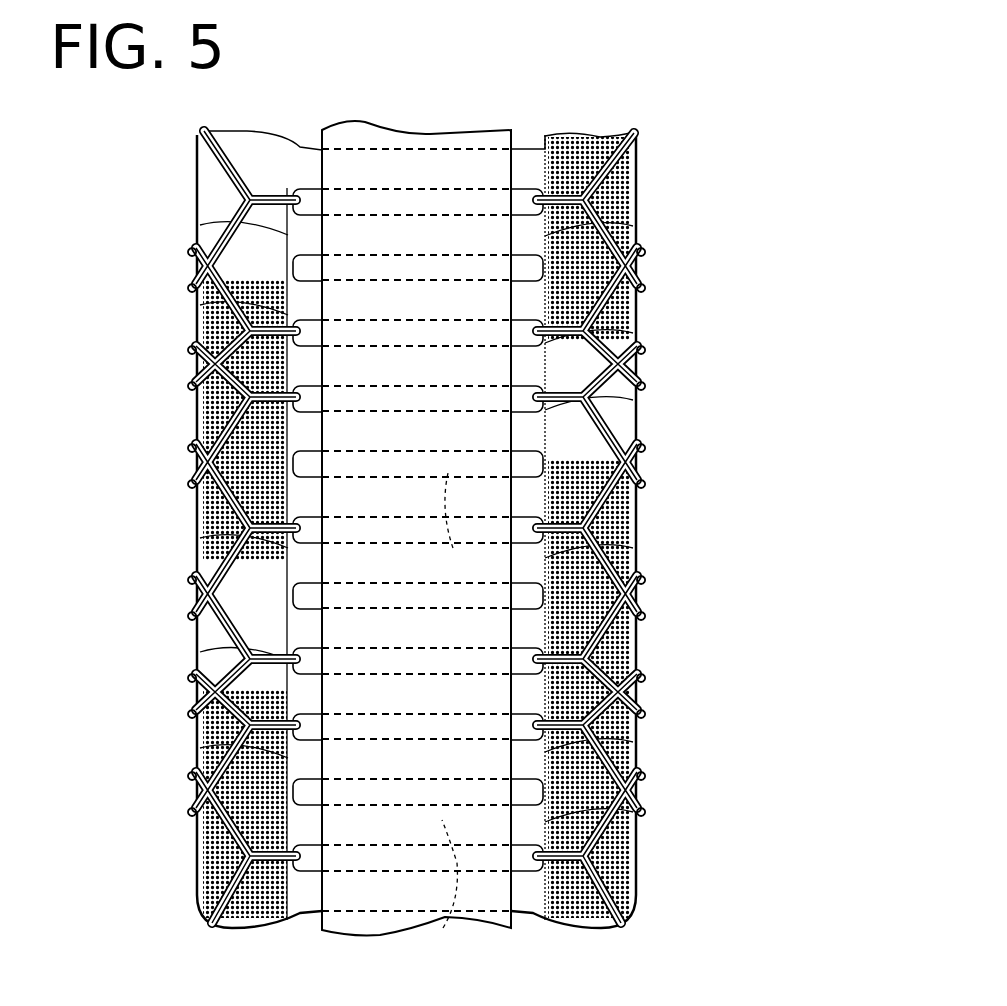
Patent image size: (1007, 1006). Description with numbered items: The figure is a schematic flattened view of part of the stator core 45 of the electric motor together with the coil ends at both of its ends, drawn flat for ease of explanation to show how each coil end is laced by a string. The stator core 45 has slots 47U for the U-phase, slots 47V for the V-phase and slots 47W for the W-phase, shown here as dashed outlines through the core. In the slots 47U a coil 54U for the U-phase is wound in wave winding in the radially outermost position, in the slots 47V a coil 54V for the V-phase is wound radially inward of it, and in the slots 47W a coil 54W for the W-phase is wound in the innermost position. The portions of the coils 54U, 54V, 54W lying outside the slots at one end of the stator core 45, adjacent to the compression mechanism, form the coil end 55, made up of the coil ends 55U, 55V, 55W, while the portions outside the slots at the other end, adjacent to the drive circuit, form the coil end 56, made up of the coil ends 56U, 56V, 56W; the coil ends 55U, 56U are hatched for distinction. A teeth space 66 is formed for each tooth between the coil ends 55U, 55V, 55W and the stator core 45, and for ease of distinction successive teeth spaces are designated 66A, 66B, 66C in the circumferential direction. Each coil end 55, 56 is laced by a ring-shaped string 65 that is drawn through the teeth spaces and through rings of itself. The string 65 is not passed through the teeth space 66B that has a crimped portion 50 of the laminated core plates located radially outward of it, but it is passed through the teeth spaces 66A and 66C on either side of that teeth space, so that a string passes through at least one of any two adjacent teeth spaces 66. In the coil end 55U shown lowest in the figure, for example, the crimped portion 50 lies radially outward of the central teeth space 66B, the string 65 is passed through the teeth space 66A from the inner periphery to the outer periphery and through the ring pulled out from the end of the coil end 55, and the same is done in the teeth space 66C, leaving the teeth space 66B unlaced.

The stator core 45 is at (477, 898).
The slot for U-phase 47U is at (348, 319).
The slot for V-phase 47V is at (348, 188).
The slot for W-phase 47W is at (348, 254).
The crimped portion 50 is at (449, 714).
The coil for U-phase 54U is at (215, 305).
The coil for V-phase 54V is at (200, 222).
The coil for W-phase 54W is at (215, 535).
The coil end 55 is at (187, 897).
The coil end of U-phase coil 55U is at (170, 522).
The coil end of V-phase coil 55V is at (175, 429).
The coil end of W-phase coil 55W is at (169, 531).
The coil end 56 is at (647, 901).
The coil end of U-phase coil 56U is at (637, 223).
The coil end of V-phase coil 56V is at (637, 397).
The coil end of W-phase coil 56W is at (637, 330).
The string 65 is at (218, 182).
The teeth space 66 is at (416, 527).
The teeth space 66A is at (305, 268).
The teeth space 66B is at (308, 200).
The teeth space 66C is at (305, 333).